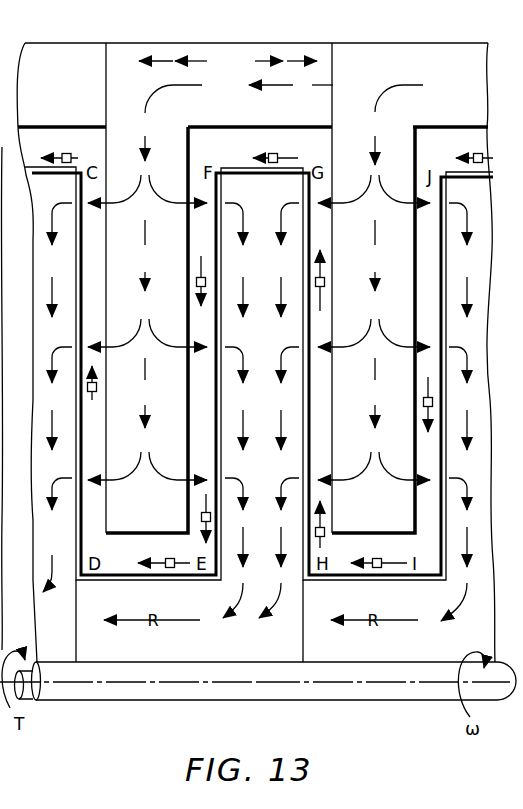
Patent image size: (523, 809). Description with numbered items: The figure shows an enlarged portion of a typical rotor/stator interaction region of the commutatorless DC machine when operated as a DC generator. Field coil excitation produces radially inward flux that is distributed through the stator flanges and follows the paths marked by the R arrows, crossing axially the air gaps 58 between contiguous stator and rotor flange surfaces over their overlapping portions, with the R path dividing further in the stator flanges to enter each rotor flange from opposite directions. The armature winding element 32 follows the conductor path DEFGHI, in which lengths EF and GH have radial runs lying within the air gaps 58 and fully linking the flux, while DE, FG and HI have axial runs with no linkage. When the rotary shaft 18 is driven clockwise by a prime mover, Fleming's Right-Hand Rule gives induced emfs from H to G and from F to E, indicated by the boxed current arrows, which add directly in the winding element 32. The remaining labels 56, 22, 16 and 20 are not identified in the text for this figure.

The inlet chamber 56 is at (256, 57).
The armature winding element 32 is at (33, 200).
The flow channel 22 is at (137, 351).
The gap between pockets 16 is at (261, 410).
The air gap 58 is at (192, 418).
The rotary shaft 18 is at (190, 687).
The roll 20 is at (400, 687).